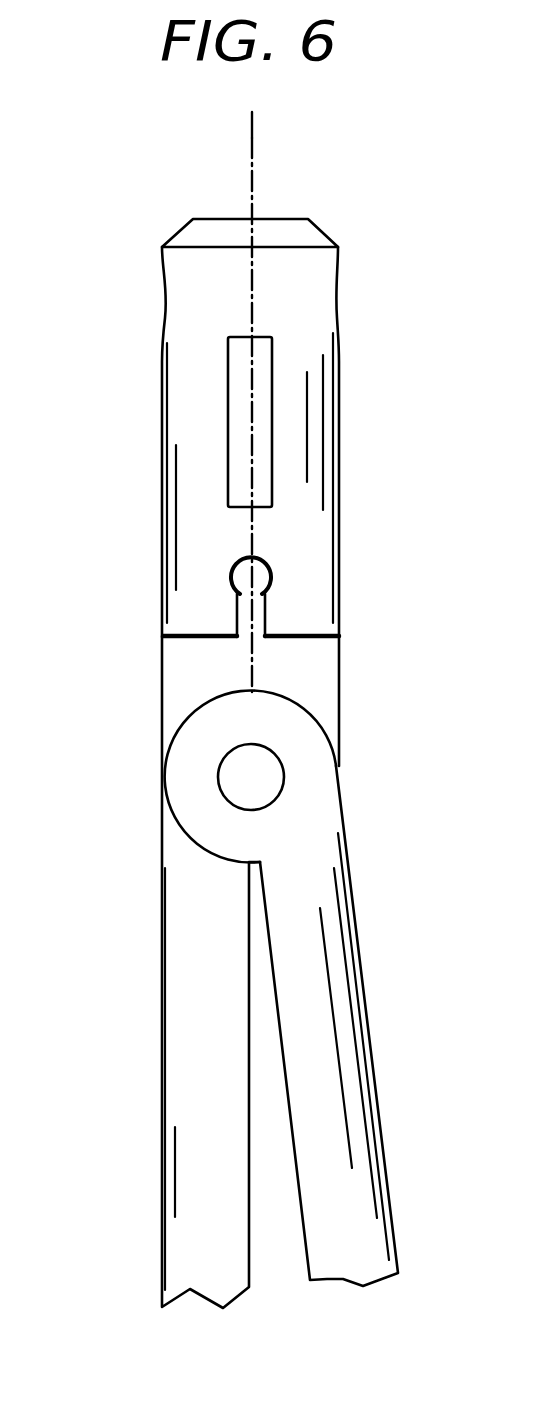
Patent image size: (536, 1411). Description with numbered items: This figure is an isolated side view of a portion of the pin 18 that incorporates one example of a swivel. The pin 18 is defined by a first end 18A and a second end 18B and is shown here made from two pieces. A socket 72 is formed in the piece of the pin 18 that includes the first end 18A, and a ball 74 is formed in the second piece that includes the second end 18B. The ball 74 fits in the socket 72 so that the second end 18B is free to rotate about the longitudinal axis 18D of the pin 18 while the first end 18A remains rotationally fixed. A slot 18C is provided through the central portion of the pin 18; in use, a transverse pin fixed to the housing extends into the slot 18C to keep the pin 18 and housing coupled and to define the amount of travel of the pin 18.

The pin 18 is at (340, 483).
The first end 18A is at (312, 302).
The second end 18B is at (162, 778).
The slot 18C is at (262, 410).
The longitudinal axis 18D is at (253, 172).
The socket 72 is at (233, 565).
The ball 74 is at (236, 578).